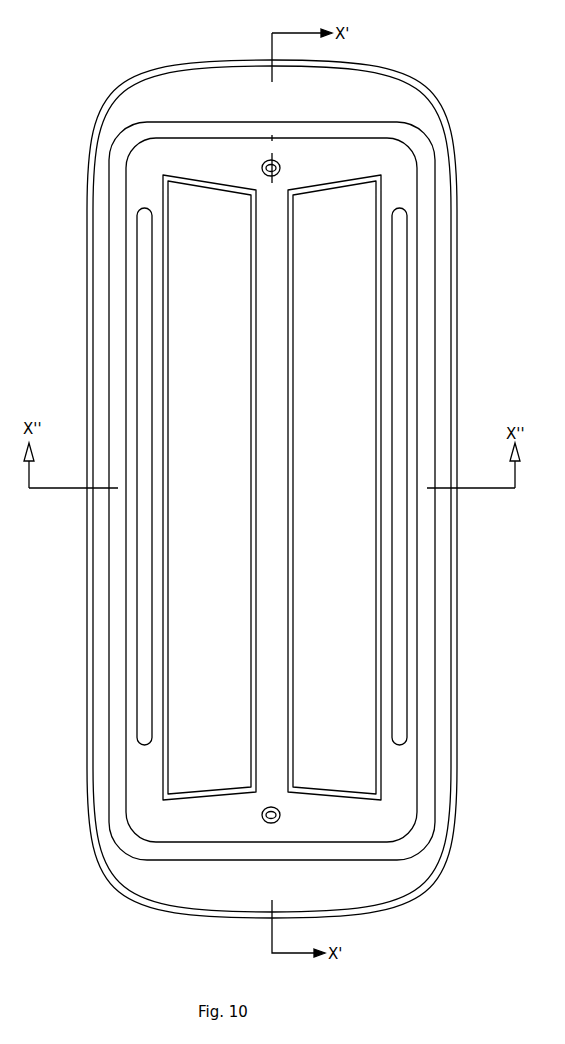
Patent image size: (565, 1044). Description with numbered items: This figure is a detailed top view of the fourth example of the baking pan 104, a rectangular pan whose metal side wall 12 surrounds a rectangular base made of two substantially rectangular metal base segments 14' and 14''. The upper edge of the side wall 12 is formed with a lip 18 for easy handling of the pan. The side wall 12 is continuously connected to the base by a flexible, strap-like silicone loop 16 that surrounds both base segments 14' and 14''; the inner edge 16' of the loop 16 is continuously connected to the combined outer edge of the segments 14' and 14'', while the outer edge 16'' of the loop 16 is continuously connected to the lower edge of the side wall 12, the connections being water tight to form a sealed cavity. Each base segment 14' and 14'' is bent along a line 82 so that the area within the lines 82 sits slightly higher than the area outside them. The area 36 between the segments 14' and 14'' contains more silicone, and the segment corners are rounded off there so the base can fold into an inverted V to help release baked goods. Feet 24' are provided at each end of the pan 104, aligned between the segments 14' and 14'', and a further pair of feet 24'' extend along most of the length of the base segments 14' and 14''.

The side wall 12 is at (433, 582).
The base segment 14' is at (209, 487).
The base segment 14'' is at (334, 487).
The silicone loop 16 is at (317, 675).
The inner edge of silicone loop 16' is at (271, 314).
The outer edge of silicone loop 16'' is at (272, 291).
The lip 18 is at (157, 911).
The feet 24' is at (300, 489).
The pair of feet 24'' is at (268, 470).
The area of base with extra silicone 36 is at (257, 797).
The bend line 82 is at (168, 690).
The baking pan 104 is at (486, 895).